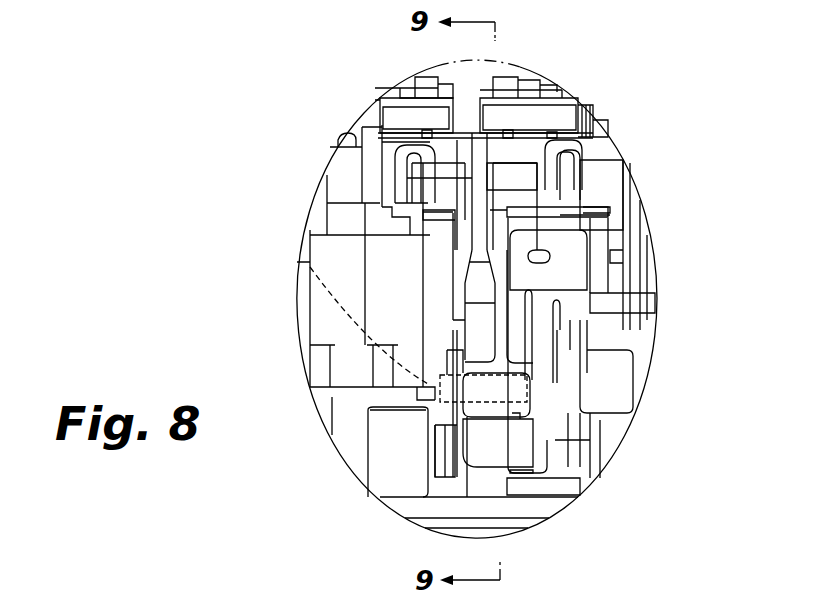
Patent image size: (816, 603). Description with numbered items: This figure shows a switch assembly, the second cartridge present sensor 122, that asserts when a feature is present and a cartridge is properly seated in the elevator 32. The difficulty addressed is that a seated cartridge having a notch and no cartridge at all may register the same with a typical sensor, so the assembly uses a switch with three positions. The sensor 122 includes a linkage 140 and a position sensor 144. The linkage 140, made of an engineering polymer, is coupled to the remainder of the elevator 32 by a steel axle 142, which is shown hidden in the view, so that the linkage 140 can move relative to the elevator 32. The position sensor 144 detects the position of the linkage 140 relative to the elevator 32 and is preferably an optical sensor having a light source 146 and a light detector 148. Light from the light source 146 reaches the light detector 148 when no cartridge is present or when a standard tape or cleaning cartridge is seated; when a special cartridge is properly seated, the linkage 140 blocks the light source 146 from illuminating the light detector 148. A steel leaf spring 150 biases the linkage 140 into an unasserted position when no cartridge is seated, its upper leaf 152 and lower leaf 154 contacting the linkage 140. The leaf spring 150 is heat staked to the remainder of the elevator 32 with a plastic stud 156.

The elevator 32 is at (316, 466).
The second cartridge present sensor 122 is at (458, 283).
The linkage 140 is at (436, 234).
The axle 142 is at (300, 262).
The position sensor 144 is at (540, 143).
The light source 146 is at (580, 170).
The light detector 148 is at (436, 234).
The leaf spring 150 is at (530, 281).
The upper leaf 152 is at (462, 412).
The lower leaf 154 is at (463, 452).
The plastic stud 156 is at (550, 258).